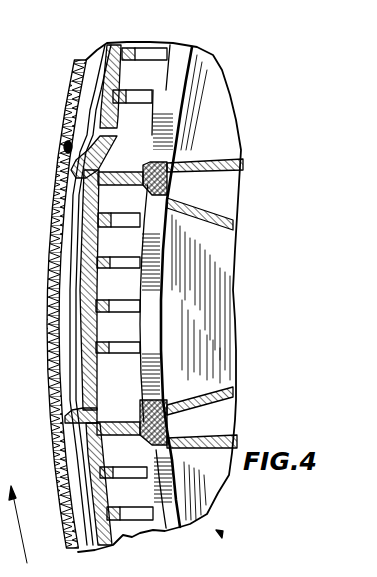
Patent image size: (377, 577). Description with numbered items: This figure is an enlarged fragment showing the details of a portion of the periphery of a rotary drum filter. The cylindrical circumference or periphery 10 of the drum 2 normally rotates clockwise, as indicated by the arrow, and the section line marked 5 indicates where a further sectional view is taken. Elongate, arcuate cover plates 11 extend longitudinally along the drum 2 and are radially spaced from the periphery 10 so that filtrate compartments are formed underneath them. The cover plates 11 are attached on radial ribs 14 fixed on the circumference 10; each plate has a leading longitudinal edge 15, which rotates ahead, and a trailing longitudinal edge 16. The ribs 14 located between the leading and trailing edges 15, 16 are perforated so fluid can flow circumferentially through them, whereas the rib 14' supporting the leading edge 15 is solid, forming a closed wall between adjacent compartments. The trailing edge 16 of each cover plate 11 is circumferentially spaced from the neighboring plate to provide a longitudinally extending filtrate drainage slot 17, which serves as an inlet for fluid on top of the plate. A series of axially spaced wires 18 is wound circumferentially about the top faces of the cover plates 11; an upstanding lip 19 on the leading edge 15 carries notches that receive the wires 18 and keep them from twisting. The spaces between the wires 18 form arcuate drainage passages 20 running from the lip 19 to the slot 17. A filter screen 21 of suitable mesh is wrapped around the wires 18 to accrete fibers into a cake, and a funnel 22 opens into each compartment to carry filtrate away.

The drum 2 is at (148, 22).
The section line 5- 5 is at (50, 305).
The drum periphery 10 is at (180, 64).
The cover plate 11 is at (96, 240).
The radial rib 14 is at (187, 366).
The solid rib 14' is at (77, 310).
The leading longitudinal edge 15 is at (68, 176).
The trailing longitudinal edge 16 is at (118, 118).
The filtrate drainage slot 17 is at (95, 123).
The wire 18 is at (96, 64).
The upstanding lip 19 is at (64, 146).
The arcuate drainage passage 20 is at (72, 218).
The filter screen 21 is at (74, 78).
The funnel 22 is at (217, 88).